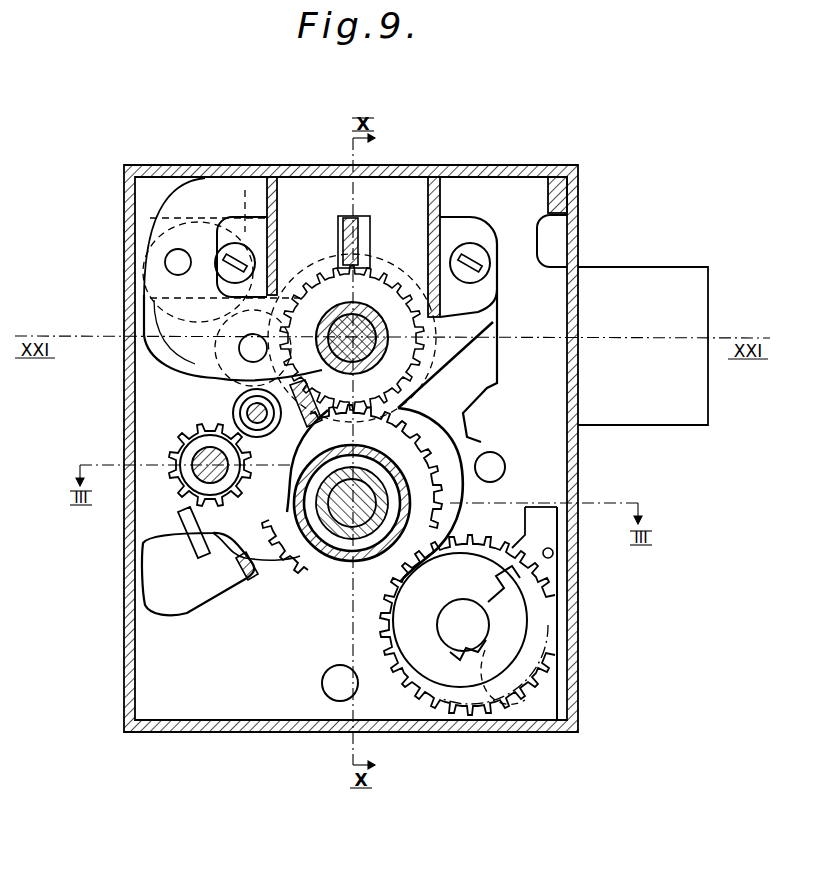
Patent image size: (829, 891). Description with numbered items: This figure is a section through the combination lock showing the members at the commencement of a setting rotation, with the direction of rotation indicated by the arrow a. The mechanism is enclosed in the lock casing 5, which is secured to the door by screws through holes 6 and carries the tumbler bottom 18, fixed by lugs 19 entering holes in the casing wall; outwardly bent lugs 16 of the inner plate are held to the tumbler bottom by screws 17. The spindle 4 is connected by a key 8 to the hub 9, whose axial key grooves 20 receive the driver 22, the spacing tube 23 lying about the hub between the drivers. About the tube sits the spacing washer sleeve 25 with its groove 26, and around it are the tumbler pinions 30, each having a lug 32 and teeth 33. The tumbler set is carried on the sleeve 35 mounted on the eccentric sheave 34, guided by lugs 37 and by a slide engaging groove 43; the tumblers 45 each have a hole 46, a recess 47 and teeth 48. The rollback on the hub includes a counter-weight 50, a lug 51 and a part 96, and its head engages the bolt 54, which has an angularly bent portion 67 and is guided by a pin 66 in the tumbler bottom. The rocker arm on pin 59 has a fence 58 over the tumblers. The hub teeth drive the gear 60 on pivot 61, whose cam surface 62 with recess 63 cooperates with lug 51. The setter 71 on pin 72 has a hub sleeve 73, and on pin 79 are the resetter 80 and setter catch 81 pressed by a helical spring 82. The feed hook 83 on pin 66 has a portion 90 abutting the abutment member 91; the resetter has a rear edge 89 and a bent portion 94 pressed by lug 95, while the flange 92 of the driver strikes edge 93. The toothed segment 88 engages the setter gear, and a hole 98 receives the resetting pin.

The spindle 4 is at (340, 520).
The lock casing 5 is at (578, 640).
The holes 6 is at (498, 467).
The key 8 is at (361, 515).
The hub 9 is at (300, 582).
The outwardly bent lugs 16 is at (228, 228).
The screws 17 is at (226, 250).
The tumbler bottom 18 is at (167, 208).
The lugs 19 is at (270, 176).
The axial key grooves 20 is at (250, 578).
The driver 22 is at (306, 576).
The spacing tube 23 is at (390, 600).
The spacing washer sleeve 25 is at (435, 501).
The groove 26 is at (360, 437).
The tumbler pinions 30 is at (222, 592).
The lug 32 is at (245, 540).
The teeth 33 is at (370, 408).
The eccentric sheave 34 is at (320, 275).
The sleeve 35 is at (342, 317).
The lugs 37 is at (370, 257).
The groove 43 is at (385, 330).
The tumblers 45 is at (300, 333).
The hole 46 is at (240, 348).
The recess 47 is at (235, 303).
The teeth 48 is at (388, 270).
The counter-weight 50 is at (165, 592).
The lug 51 is at (372, 600).
The lock bolt 54 is at (638, 278).
The angularly bent portion 58 is at (357, 242).
The pin 59 is at (176, 262).
The gear 60 is at (495, 540).
The pivot 61 is at (468, 608).
The cam surface 62 is at (515, 560).
The recess 63 is at (495, 667).
The pin 66 is at (232, 330).
The angularly bent portion 67 is at (560, 195).
The setter 71 is at (190, 485).
The pin 72 is at (185, 478).
The hub sleeve 73 is at (178, 447).
The pin 79 is at (235, 430).
The resetter 80 is at (285, 582).
The setter catch 81 is at (245, 513).
The helical spring 82 is at (247, 414).
The feed hook 83 is at (240, 452).
The toothed segment 88 is at (440, 653).
The rear edge 89 is at (250, 400).
The angularly bent portion 90 is at (285, 380).
The abutment member 91 is at (270, 367).
The upwardly bent flange 92 is at (250, 552).
The edge 93 is at (487, 398).
The angularly bent portion 94 is at (188, 588).
The lug 95 is at (467, 440).
The part 96 is at (250, 580).
The hole 98 is at (553, 553).